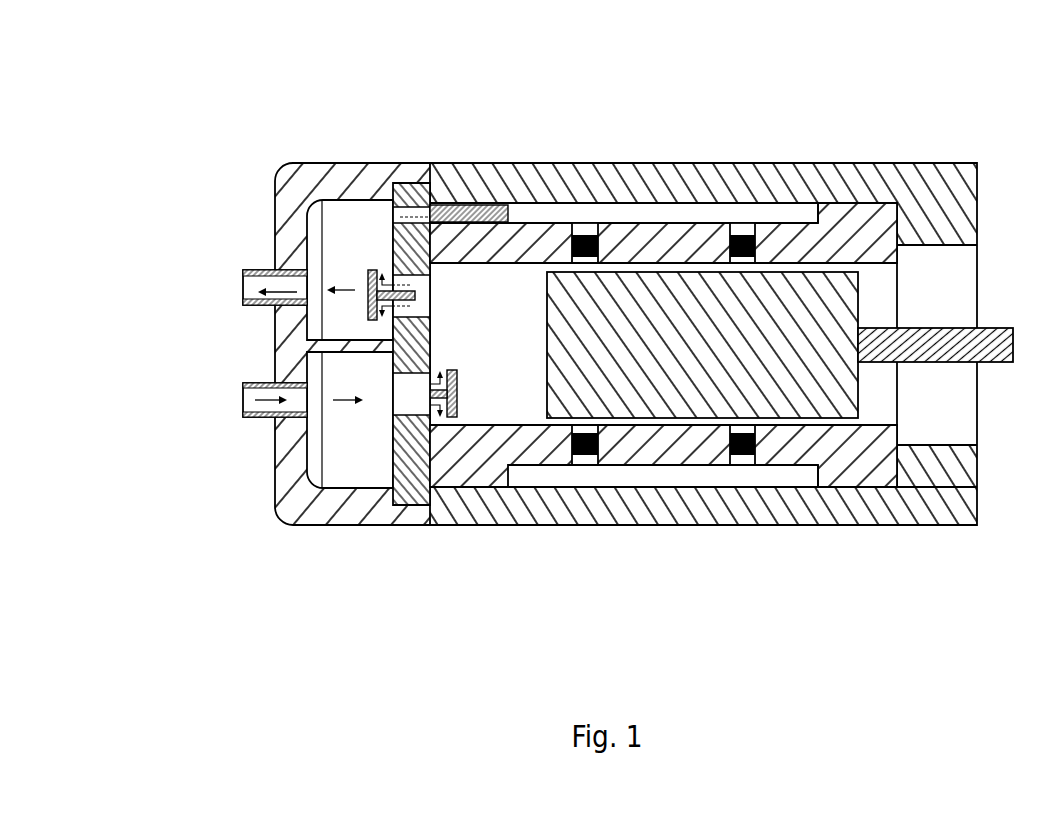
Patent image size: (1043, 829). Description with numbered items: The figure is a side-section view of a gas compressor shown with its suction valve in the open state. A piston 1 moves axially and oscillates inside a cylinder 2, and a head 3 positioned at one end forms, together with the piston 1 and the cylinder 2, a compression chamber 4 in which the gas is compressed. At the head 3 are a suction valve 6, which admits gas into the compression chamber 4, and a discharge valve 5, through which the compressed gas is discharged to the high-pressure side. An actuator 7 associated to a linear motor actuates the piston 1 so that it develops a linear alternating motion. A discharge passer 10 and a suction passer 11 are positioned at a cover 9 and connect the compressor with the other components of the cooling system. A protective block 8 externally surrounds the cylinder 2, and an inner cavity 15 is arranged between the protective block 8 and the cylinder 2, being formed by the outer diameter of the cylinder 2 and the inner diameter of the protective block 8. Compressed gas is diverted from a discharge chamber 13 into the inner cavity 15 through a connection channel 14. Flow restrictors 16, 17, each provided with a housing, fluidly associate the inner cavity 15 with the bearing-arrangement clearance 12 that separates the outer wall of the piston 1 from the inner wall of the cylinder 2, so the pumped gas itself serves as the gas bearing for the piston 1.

The piston 1 is at (683, 326).
The cylinder 2 is at (655, 240).
The head 3 is at (413, 247).
The compression chamber 4 is at (508, 365).
The discharge valve 5 is at (370, 283).
The suction valve 6 is at (395, 468).
The actuator 7 is at (958, 345).
The protective block 8 is at (925, 187).
The cover 9 is at (292, 490).
The discharge passer 10 is at (253, 282).
The suction passer 11 is at (258, 404).
The bearing-arrangement clearance 12 is at (823, 418).
The discharge chamber 13 is at (337, 310).
The connection channel 14 is at (470, 215).
The inner cavity 15 is at (623, 476).
The flow restrictor 16 is at (742, 248).
The flow restrictor 17 is at (745, 453).